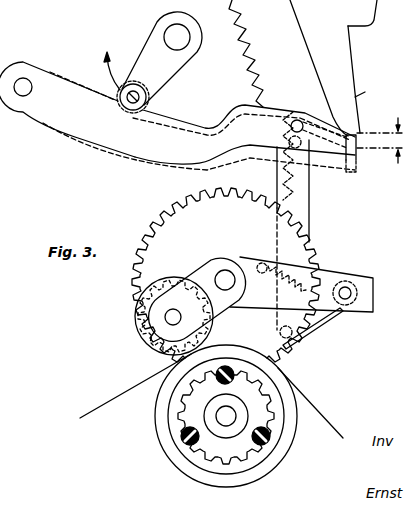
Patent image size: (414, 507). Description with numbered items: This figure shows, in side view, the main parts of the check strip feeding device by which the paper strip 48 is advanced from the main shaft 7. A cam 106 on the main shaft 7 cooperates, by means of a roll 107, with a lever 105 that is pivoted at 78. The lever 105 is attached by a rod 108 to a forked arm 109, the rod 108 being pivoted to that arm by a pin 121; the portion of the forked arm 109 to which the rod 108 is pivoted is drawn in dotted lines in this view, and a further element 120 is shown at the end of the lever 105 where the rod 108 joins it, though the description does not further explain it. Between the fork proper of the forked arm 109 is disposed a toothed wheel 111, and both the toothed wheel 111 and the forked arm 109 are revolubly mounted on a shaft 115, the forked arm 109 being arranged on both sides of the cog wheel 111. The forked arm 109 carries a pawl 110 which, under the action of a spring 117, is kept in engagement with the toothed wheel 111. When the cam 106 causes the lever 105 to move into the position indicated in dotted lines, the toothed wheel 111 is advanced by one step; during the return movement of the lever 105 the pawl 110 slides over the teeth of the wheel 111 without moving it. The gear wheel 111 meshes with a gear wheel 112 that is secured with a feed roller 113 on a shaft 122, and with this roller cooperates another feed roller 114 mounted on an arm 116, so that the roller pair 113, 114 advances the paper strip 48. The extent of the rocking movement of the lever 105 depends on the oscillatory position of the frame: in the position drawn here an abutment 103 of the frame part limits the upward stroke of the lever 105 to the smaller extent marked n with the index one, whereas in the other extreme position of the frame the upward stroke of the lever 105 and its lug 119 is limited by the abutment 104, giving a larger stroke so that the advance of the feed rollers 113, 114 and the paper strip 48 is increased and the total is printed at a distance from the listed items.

The main shaft 7 is at (186, 30).
The paper strip 48 is at (309, 400).
The pivot 78 is at (33, 92).
The abutment 103 is at (357, 116).
The abutment 104 is at (358, 27).
The lever 105 is at (252, 107).
The cam 106 is at (165, 80).
The roll 107 is at (131, 90).
The rod 108 is at (311, 207).
The forked arm 109 is at (328, 275).
The pawl 110 is at (324, 320).
The toothed wheel 111 is at (165, 224).
The gear wheel 112 is at (192, 466).
The feed roller 113 is at (156, 430).
The feed roller 114 is at (142, 344).
The shaft 115 is at (225, 269).
The arm 116 is at (190, 287).
The spring 117 is at (262, 262).
The lug 119 is at (357, 150).
The pin 120 is at (296, 120).
The pin 121 is at (279, 328).
The shaft 122 is at (232, 420).